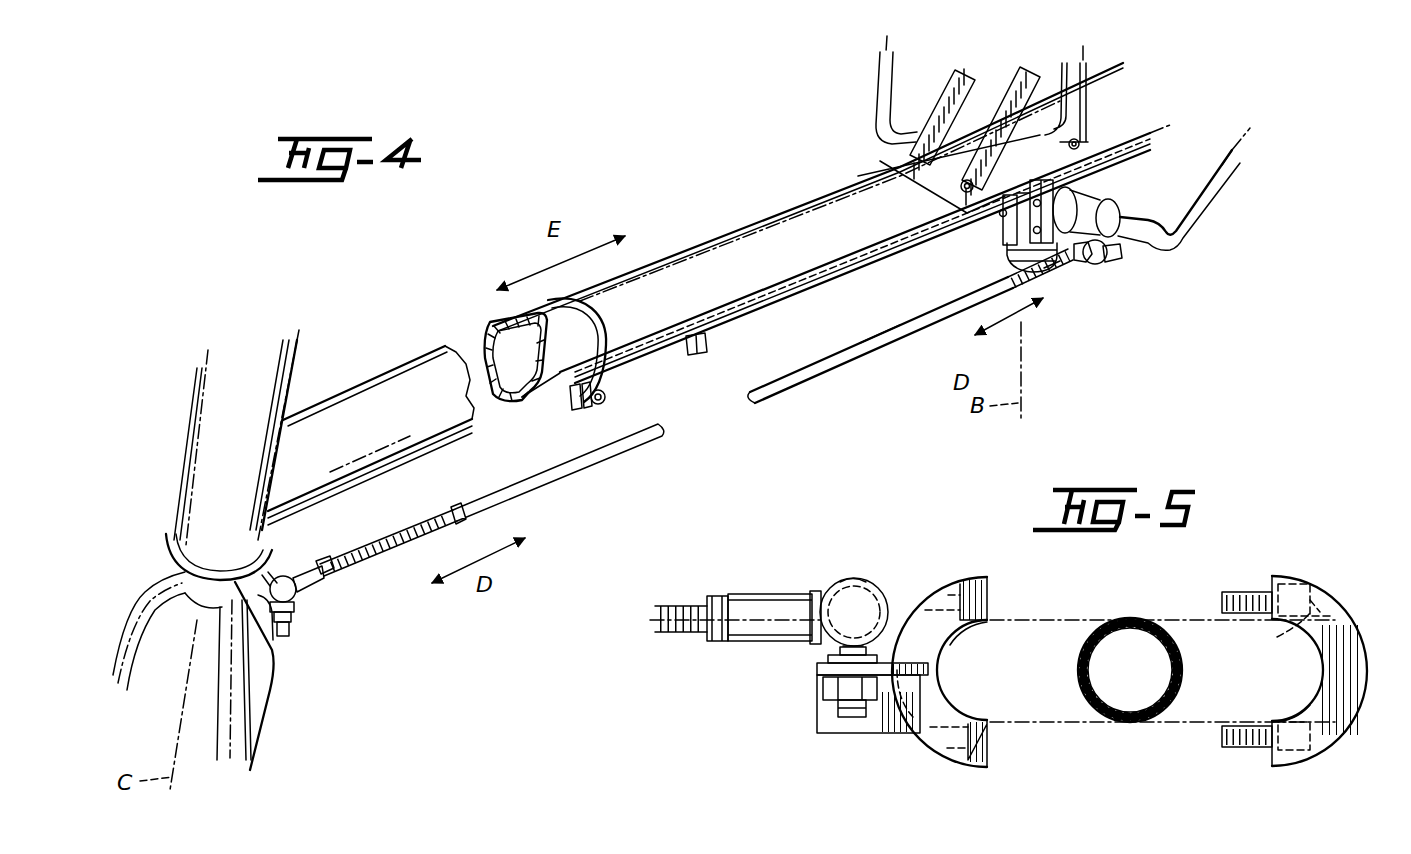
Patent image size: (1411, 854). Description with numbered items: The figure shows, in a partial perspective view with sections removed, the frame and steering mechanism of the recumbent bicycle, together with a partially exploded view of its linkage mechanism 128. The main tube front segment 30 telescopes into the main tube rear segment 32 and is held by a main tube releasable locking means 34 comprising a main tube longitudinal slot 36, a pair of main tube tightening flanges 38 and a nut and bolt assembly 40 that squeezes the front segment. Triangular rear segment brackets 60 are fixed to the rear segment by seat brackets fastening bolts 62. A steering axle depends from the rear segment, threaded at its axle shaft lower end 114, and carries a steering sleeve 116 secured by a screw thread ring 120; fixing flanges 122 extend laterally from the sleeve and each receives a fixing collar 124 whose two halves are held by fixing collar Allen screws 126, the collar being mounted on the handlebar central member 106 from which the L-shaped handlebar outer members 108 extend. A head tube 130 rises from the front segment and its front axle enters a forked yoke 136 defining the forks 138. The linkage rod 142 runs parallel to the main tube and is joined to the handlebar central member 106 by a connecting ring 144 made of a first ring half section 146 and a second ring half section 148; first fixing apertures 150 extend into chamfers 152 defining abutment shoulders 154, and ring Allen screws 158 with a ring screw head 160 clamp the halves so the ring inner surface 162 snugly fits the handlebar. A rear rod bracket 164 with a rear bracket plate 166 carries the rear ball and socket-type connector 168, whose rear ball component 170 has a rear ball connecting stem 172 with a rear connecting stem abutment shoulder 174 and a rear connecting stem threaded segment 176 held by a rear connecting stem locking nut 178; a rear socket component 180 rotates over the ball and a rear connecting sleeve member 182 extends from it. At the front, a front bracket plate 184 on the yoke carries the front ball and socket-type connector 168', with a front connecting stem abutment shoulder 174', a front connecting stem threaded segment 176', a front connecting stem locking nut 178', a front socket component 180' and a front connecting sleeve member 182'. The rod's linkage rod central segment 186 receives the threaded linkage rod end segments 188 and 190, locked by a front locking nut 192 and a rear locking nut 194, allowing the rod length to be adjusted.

In FIG. 4, the main tube front segment 30 is at (366, 414).
In FIG. 4, the main tube rear segment 32 is at (677, 272).
In FIG. 4, the main tube releasable locking means 34 is at (620, 404).
In FIG. 4, the main tube longitudinal slot 36 is at (576, 410).
In FIG. 4, the main tube tightening flanges 38 is at (573, 394).
In FIG. 4, the nut and bolt assembly 40 is at (605, 396).
In FIG. 4, the rear segment brackets 60 is at (960, 93).
In FIG. 4, the seat brackets fastening bolts 62 is at (960, 184).
In FIG. 4, the handlebar central member 106 is at (1110, 205).
In FIG. 5, the handlebar central member 106 is at (1123, 620).
In FIG. 4, the handlebar outer members 108 is at (887, 78).
In FIG. 4, the axle shaft lower end 114 is at (1000, 280).
In FIG. 4, the steering sleeve 116 is at (998, 270).
In FIG. 4, the screw thread ring 120 is at (1060, 263).
In FIG. 4, the fixing flanges 122 is at (856, 176).
In FIG. 4, the fixing collar 124 is at (1180, 228).
In FIG. 4, the fixing collar Allen screws 126 is at (1003, 228).
In FIG. 4, the linkage mechanism 128 is at (797, 398).
In FIG. 4, the head tube 130 is at (215, 386).
In FIG. 4, the forked yoke 136 is at (112, 577).
In FIG. 4, the forks 138 is at (140, 683).
In FIG. 4, the linkage rod 142 is at (873, 362).
In FIG. 4, the connecting ring 144 is at (1124, 262).
In FIG. 5, the connecting ring 144 is at (1133, 793).
In FIG. 5, the first ring half section 146 is at (1350, 697).
In FIG. 5, the second ring half section 148 is at (920, 707).
In FIG. 5, the first fixing apertures 150 is at (1282, 580).
In FIG. 5, the chamfers 152 is at (1327, 617).
In FIG. 5, the abutment shoulders 154 is at (1285, 640).
In FIG. 5, the ring Allen screws 158 is at (1238, 580).
In FIG. 5, the ring screw head 160 is at (1310, 605).
In FIG. 5, the ring inner surface 162 is at (988, 637).
In FIG. 5, the rear rod bracket 164 is at (840, 745).
In FIG. 5, the rear bracket plate 166 is at (818, 670).
In FIG. 4, the rear ball and socket-type connector 168 is at (1147, 282).
In FIG. 5, the rear ball and socket-type connector 168 is at (889, 591).
In FIG. 4, the front ball and socket-type connector 168' is at (332, 594).
In FIG. 5, the rear ball component 170 is at (853, 572).
In FIG. 5, the rear ball connecting stem 172 is at (845, 647).
In FIG. 5, the rear connecting stem abutment shoulder 174 is at (793, 680).
In FIG. 4, the front connecting stem abutment shoulder 174' is at (342, 619).
In FIG. 5, the rear connecting stem threaded segment 176 is at (816, 744).
In FIG. 4, the front connecting stem threaded segment 176' is at (314, 655).
In FIG. 5, the rear connecting stem locking nut 178 is at (808, 719).
In FIG. 4, the front connecting stem locking nut 178' is at (331, 638).
In FIG. 5, the rear socket component 180 is at (839, 591).
In FIG. 4, the front socket component 180' is at (293, 656).
In FIG. 5, the rear connecting sleeve member 182 is at (774, 598).
In FIG. 4, the front connecting sleeve member 182' is at (342, 542).
In FIG. 4, the front bracket plate 184 is at (262, 578).
In FIG. 4, the linkage rod central segment 186 is at (600, 458).
In FIG. 4, the linkage rod end segment 188 is at (423, 535).
In FIG. 4, the linkage rod end segment 190 is at (1017, 283).
In FIG. 5, the linkage rod end segment 190 is at (673, 606).
In FIG. 4, the front locking nut 192 is at (350, 566).
In FIG. 4, the rear locking nut 194 is at (1082, 263).
In FIG. 5, the rear locking nut 194 is at (717, 597).